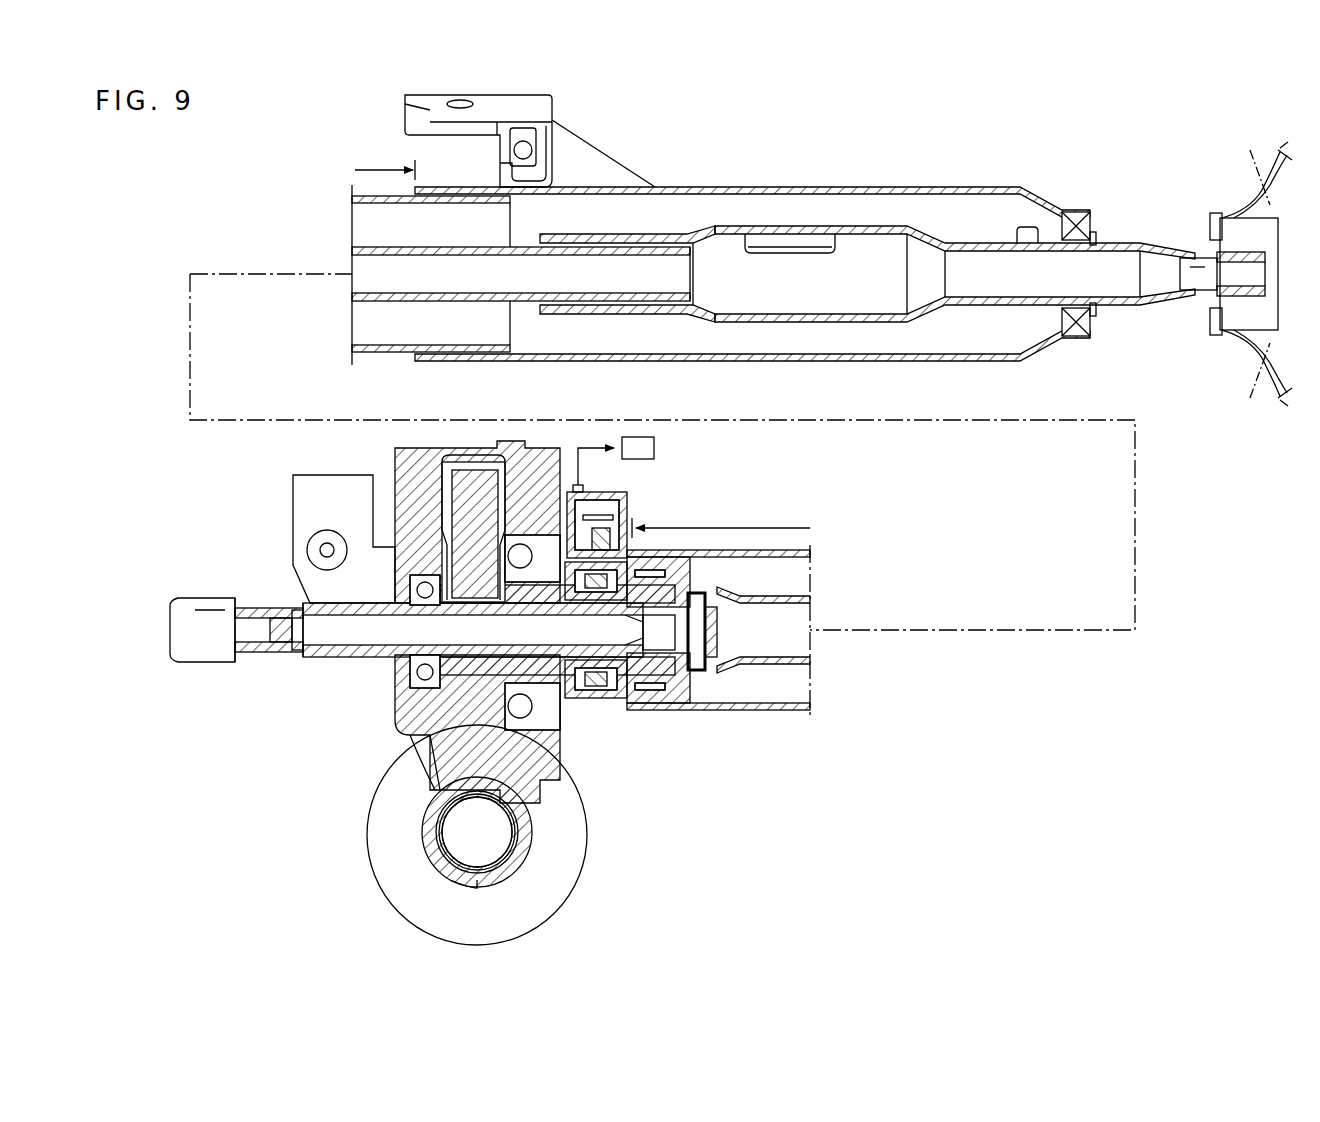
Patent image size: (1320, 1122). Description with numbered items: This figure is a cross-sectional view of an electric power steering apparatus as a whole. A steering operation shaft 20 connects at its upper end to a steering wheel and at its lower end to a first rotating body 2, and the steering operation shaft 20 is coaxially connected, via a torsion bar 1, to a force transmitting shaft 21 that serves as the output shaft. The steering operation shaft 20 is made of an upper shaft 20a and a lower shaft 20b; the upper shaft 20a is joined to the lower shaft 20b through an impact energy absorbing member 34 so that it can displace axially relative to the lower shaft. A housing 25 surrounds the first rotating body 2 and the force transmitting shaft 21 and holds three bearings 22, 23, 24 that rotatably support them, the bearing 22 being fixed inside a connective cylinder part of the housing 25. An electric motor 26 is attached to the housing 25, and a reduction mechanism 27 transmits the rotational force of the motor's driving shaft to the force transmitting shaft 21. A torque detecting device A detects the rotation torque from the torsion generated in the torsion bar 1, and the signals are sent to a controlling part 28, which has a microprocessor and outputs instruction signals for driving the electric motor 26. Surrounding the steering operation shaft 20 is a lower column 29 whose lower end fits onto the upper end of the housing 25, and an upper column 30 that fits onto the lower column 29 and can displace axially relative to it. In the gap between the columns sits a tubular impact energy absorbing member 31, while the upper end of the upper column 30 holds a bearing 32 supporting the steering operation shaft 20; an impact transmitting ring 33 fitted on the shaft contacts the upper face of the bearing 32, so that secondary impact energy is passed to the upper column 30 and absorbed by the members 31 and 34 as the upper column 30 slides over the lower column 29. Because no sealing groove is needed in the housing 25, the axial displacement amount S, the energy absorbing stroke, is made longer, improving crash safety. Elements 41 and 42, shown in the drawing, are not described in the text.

The torsion bar 1 is at (325, 648).
The first rotating body 2 is at (722, 703).
The steering operation shaft 20 is at (795, 228).
The upper shaft 20a is at (978, 322).
The lower shaft 20b is at (505, 302).
The force transmitting shaft 21 is at (240, 665).
The bearing 22 is at (690, 706).
The bearing 23 is at (545, 790).
The bearing 24 is at (400, 694).
The housing 25 is at (628, 748).
The electric motor 26 is at (372, 850).
The reduction mechanism 27 is at (420, 800).
The controlling part 28 is at (655, 445).
The lower column 29 is at (380, 353).
The upper column 30 is at (828, 361).
The impact energy absorbing member 31 is at (437, 362).
The bearing 32 is at (1082, 337).
The impact transmitting ring 33 is at (1096, 306).
The impact energy absorbing member 34 is at (665, 314).
The bearing 41 is at (635, 700).
The bearing 42 is at (605, 735).
The torque detecting device A is at (632, 494).
The displacement amount (energy absorbing stroke) S is at (862, 528).